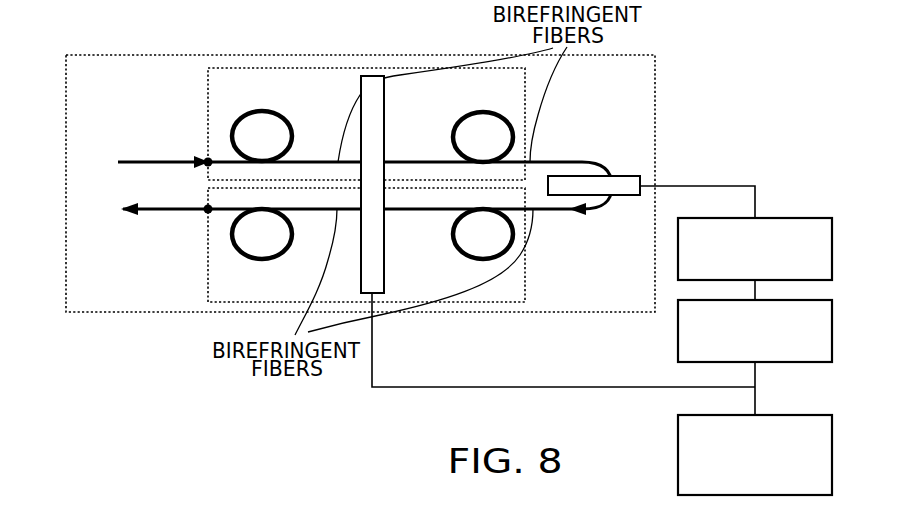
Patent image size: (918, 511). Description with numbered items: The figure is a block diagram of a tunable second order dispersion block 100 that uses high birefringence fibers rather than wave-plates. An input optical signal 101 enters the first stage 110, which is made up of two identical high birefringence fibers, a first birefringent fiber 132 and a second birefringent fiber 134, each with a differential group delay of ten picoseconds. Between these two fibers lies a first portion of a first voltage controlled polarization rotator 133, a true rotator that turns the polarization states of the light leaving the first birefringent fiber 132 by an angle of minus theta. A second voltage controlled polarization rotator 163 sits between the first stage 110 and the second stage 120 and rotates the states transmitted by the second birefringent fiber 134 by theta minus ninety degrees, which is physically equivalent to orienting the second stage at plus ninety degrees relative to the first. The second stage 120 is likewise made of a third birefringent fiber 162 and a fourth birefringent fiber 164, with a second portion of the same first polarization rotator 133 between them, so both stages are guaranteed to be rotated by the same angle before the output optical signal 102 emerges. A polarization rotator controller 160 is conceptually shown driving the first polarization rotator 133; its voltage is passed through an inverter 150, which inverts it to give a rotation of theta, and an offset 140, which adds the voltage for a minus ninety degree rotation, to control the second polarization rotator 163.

The tunable second order dispersion block 100 is at (655, 73).
The first stage 110 is at (208, 89).
The second stage 120 is at (208, 283).
The input optical signal 101 is at (200, 160).
The output optical signal 102 is at (205, 212).
The first birefringent fiber 132 is at (280, 118).
The second birefringent fiber 134 is at (463, 116).
The first voltage controlled polarization rotator 133 is at (370, 76).
The third birefringent fiber 162 is at (467, 255).
The fourth birefringent fiber 164 is at (268, 254).
The second voltage controlled polarization rotator 163 is at (630, 175).
The offset 140 is at (735, 271).
The inverter 150 is at (735, 353).
The polarization rotator controller 160 is at (735, 484).